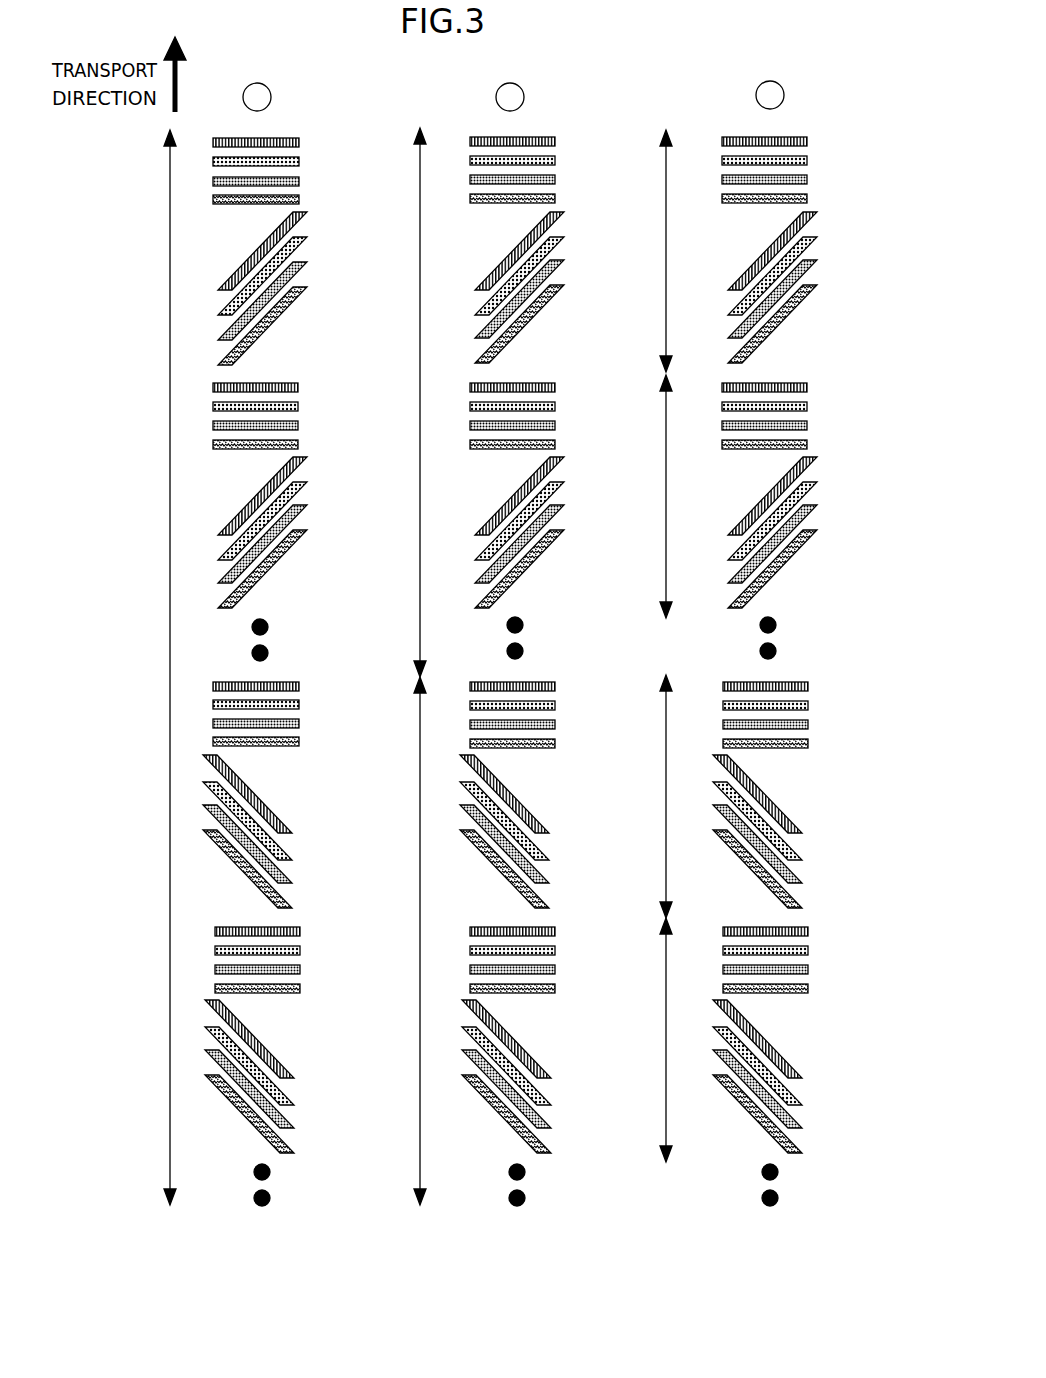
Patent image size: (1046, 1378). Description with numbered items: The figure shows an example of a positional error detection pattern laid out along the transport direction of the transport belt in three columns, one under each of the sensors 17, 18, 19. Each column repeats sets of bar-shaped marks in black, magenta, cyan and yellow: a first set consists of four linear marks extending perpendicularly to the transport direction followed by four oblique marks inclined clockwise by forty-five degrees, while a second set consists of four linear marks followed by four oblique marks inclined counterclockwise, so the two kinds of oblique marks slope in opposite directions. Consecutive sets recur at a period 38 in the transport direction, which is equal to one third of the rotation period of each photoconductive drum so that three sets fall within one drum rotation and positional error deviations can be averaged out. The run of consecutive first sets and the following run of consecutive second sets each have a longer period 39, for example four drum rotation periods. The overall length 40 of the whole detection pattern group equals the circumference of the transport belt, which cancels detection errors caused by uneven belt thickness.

The sensor 17 is at (280, 70).
The sensor 18 is at (533, 70).
The sensor 19 is at (760, 85).
The period 38 is at (666, 253).
The period 39 is at (420, 405).
The length 40 is at (170, 405).